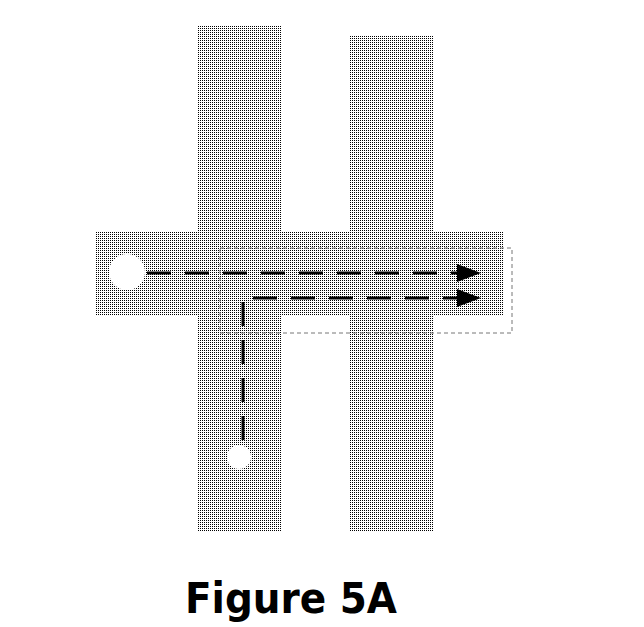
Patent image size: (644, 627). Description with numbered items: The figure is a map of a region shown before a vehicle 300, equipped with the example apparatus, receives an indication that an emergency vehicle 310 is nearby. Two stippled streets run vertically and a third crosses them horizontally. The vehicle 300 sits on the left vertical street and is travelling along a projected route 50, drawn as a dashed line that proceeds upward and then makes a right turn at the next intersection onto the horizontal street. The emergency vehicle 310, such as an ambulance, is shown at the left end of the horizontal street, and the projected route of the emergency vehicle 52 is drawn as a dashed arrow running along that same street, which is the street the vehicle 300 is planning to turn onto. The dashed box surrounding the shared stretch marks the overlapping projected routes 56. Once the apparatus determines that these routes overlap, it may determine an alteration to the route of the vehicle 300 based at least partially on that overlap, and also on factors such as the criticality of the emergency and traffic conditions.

The emergency vehicle 310 is at (112, 258).
The vehicle 300 is at (230, 448).
The projected route of the emergency vehicle 52 is at (192, 272).
The projected route 50 is at (240, 393).
The overlapping projected routes 56 is at (513, 288).